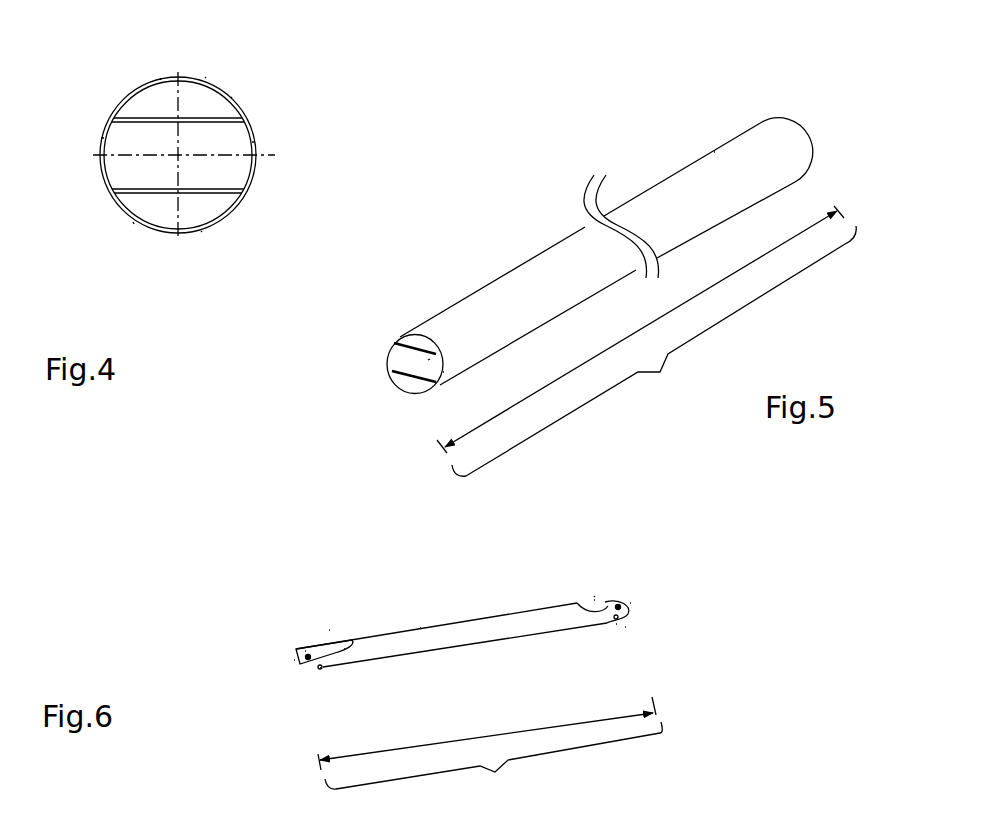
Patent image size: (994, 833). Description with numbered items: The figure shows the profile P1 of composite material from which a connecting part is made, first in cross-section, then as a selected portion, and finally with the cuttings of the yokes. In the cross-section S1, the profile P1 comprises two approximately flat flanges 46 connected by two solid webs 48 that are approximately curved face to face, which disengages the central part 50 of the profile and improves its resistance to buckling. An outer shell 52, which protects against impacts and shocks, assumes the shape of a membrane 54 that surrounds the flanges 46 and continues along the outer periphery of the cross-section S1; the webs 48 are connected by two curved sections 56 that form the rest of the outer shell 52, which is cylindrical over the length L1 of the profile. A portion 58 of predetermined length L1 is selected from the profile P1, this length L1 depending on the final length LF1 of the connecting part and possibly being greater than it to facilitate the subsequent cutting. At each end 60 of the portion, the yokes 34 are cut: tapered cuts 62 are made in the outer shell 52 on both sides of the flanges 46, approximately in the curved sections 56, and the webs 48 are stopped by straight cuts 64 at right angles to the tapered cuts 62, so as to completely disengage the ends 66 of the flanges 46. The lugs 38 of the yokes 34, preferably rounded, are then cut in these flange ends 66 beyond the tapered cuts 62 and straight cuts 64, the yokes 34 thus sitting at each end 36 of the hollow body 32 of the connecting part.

In FIG. 6, the hollow body 32 is at (420, 628).
In FIG. 6, the yoke 34 is at (306, 650).
In FIG. 6, the end of body 36 is at (329, 680).
In FIG. 6, the lug 38 is at (305, 651).
In FIG. 4, the flange 46 is at (148, 118).
In FIG. 5, the flange 46 is at (390, 365).
In FIG. 4, the solid web 48 is at (101, 138).
In FIG. 5, the solid web 48 is at (397, 343).
In FIG. 4, the central part 50 is at (183, 160).
In FIG. 5, the central part 50 is at (430, 359).
In FIG. 4, the outer shell 52 is at (229, 219).
In FIG. 5, the outer shell 52 is at (716, 209).
In FIG. 6, the outer shell 52 is at (528, 634).
In FIG. 4, the membrane 54 is at (201, 231).
In FIG. 4, the curved section 56 is at (160, 78).
In FIG. 5, the portion 58 is at (654, 351).
In FIG. 6, the portion 58 is at (493, 762).
In FIG. 6, the end of portion 60 is at (329, 630).
In FIG. 6, the tapered cut 62 is at (344, 649).
In FIG. 6, the straight cut 64 is at (320, 668).
In FIG. 6, the end of flange 66 is at (294, 660).
In FIG. 4, the profile P1 is at (205, 77).
In FIG. 5, the profile P1 is at (714, 152).
In FIG. 4, the cross-section S1 is at (231, 97).
In FIG. 5, the length L1 is at (640, 329).
In FIG. 6, the final length LF1 is at (487, 733).